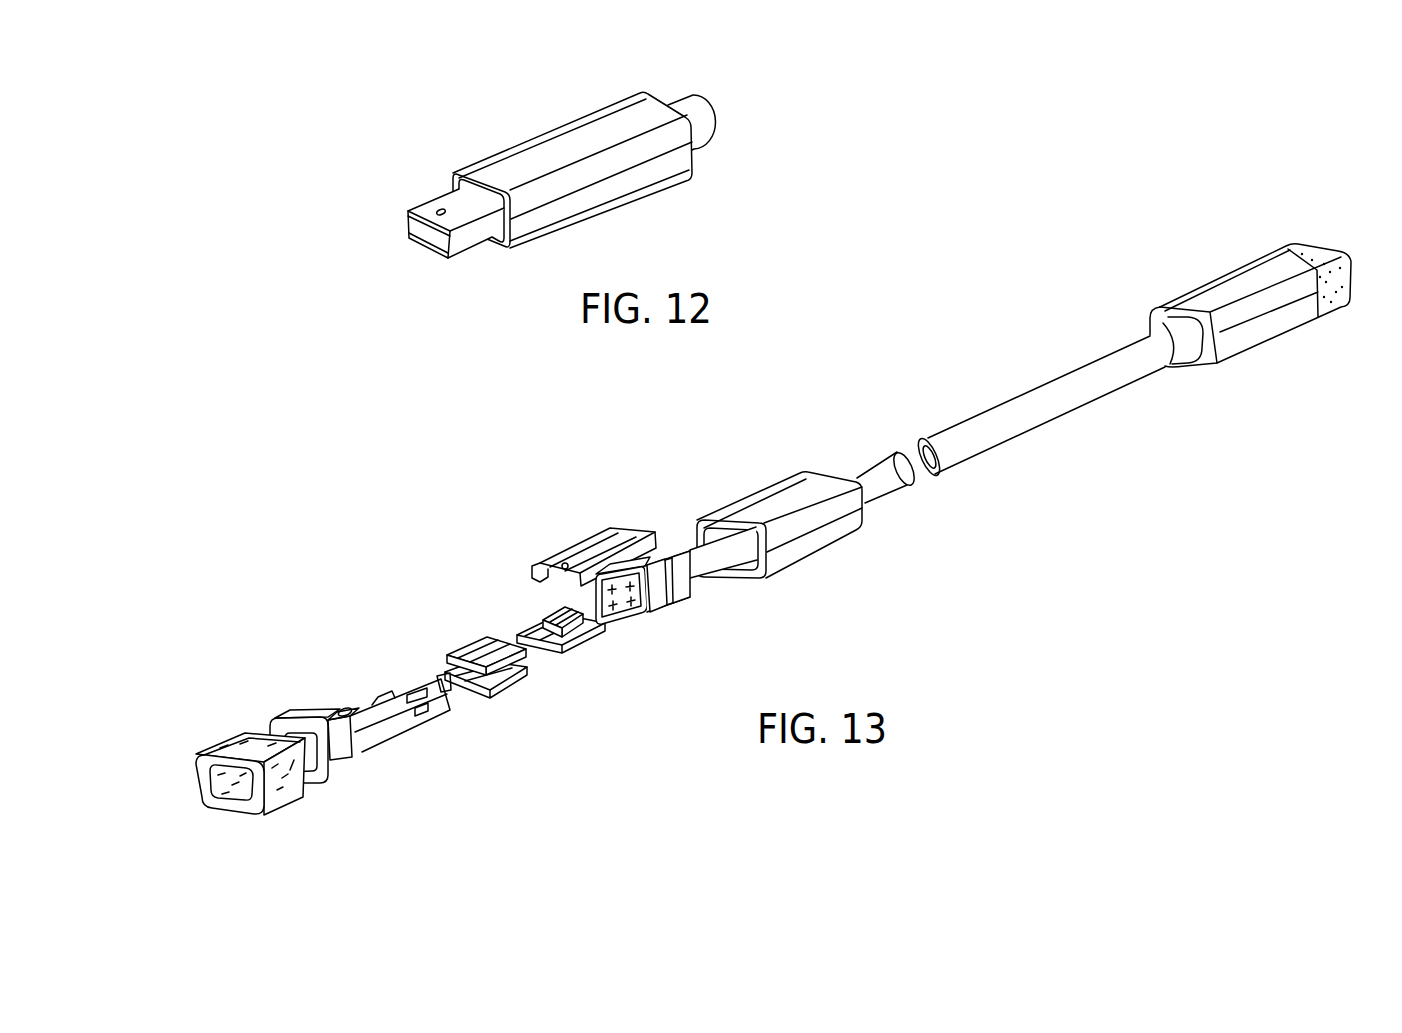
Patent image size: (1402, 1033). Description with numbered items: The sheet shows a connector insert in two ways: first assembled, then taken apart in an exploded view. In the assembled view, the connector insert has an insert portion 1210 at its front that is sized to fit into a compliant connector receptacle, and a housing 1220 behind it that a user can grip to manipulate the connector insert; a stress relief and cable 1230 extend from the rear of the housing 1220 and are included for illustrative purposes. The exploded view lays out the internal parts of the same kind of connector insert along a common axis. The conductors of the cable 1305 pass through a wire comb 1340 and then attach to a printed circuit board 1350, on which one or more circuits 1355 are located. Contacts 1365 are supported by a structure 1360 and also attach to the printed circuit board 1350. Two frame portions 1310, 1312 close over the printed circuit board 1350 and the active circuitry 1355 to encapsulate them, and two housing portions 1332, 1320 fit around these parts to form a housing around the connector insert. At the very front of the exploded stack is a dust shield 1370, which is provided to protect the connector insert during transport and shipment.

In FIG. 12, the insert portion 1210 is at (471, 240).
In FIG. 12, the housing 1220 is at (510, 163).
In FIG. 12, the stress relief and cable 1230 is at (693, 92).
In FIG. 13, the cable 1305 is at (943, 431).
In FIG. 13, the frame portion 1310 is at (383, 732).
In FIG. 13, the frame portion 1312 is at (578, 552).
In FIG. 13, the housing portion 1320 is at (828, 543).
In FIG. 13, the housing portion 1332 is at (315, 778).
In FIG. 13, the wire comb 1340 is at (633, 627).
In FIG. 13, the printed circuit board 1350 is at (578, 642).
In FIG. 13, the circuits 1355 is at (552, 610).
In FIG. 13, the structure 1360 is at (520, 660).
In FIG. 13, the contacts 1365 is at (477, 645).
In FIG. 13, the dust shield 1370 is at (227, 813).